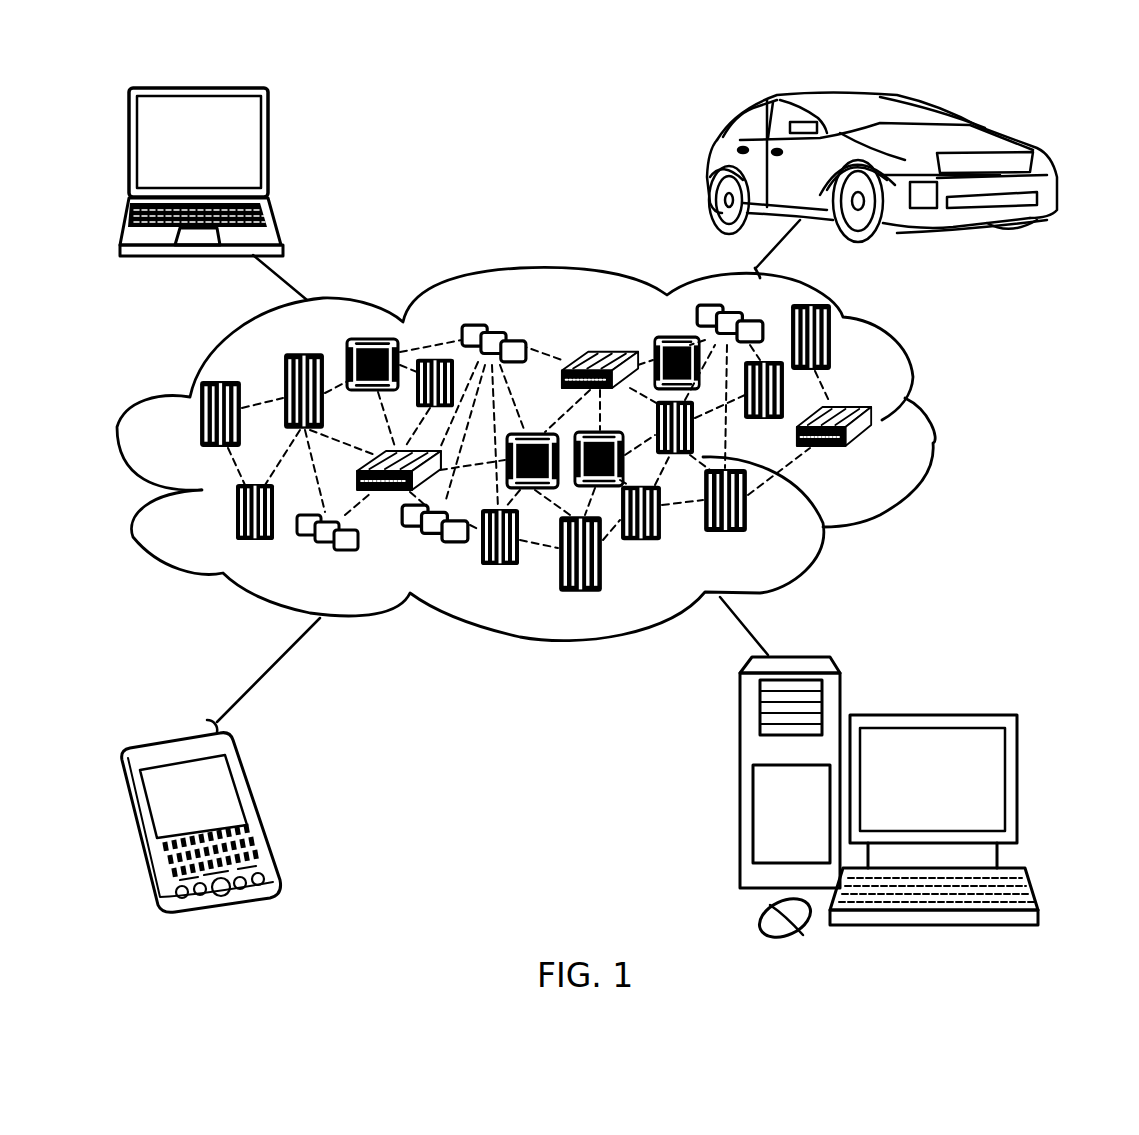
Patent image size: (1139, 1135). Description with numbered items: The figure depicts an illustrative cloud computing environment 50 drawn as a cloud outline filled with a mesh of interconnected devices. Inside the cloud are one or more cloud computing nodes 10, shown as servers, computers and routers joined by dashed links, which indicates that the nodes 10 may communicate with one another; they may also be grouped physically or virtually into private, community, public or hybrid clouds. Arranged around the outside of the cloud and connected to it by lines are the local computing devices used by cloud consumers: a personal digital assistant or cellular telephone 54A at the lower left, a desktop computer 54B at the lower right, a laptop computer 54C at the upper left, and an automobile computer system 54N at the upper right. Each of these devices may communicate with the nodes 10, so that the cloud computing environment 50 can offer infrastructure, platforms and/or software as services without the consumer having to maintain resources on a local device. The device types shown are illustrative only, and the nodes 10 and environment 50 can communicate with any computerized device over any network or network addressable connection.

The cloud computing nodes 10 is at (885, 459).
The cloud computing environment 50 is at (935, 428).
The personal digital assistant or cellular telephone 54A is at (258, 808).
The desktop computer 54B is at (932, 712).
The laptop computer 54C is at (268, 152).
The automobile computer system 54N is at (708, 170).